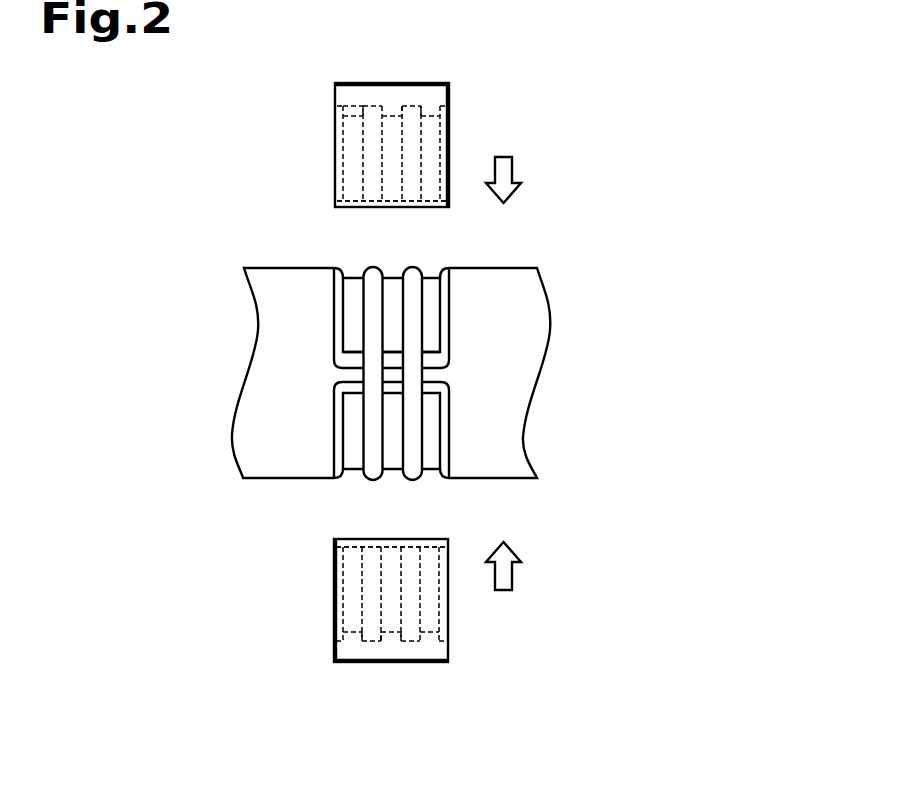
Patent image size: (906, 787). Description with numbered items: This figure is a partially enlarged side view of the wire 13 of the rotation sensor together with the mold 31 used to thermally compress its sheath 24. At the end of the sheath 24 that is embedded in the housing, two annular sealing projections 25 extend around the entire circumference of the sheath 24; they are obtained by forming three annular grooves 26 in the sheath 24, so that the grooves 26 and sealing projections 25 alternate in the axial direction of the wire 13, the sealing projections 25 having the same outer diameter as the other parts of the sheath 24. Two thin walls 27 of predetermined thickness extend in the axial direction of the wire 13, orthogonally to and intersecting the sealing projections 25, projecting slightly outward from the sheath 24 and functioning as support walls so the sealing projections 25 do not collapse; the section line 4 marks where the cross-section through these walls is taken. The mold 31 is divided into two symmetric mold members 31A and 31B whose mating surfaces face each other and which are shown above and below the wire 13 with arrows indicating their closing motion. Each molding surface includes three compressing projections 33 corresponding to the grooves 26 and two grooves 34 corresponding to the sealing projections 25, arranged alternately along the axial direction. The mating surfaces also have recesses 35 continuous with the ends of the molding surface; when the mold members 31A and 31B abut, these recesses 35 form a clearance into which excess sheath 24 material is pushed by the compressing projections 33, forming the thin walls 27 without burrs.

The wire 13 is at (521, 268).
The sheath 24 is at (270, 278).
The sealing projections 25 is at (411, 268).
The grooves 26 is at (357, 284).
The thin walls 27 is at (446, 367).
The mold 31 is at (444, 53).
The mold member 31A is at (448, 652).
The mold member 31B is at (449, 84).
The compressing projections 33 is at (432, 122).
The grooves 34 is at (405, 106).
The recesses 35 is at (348, 203).
The section line IV-IV 4 is at (393, 515).